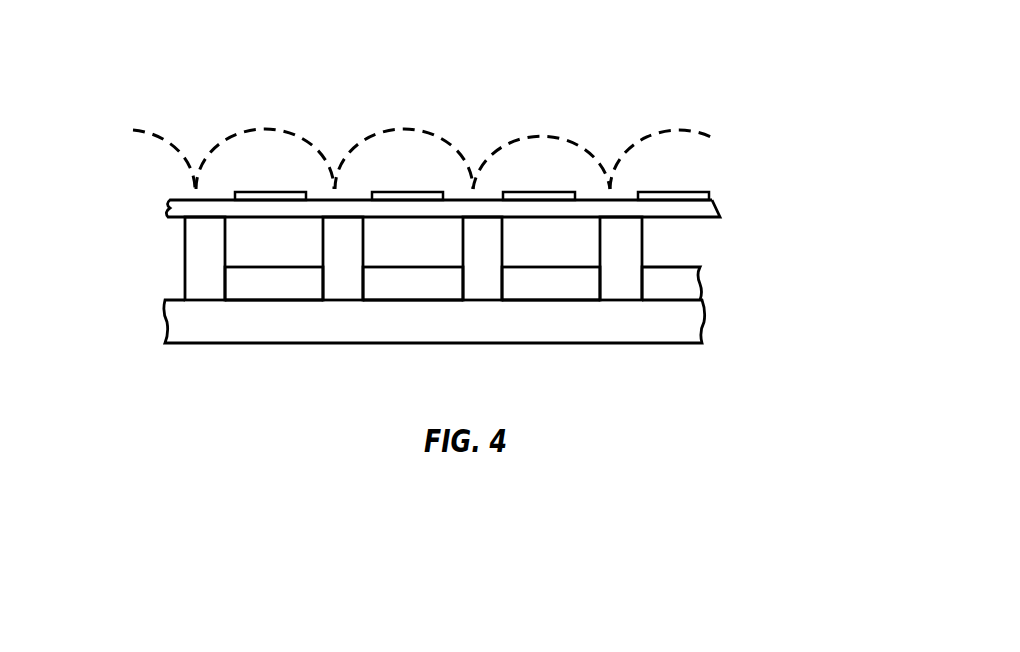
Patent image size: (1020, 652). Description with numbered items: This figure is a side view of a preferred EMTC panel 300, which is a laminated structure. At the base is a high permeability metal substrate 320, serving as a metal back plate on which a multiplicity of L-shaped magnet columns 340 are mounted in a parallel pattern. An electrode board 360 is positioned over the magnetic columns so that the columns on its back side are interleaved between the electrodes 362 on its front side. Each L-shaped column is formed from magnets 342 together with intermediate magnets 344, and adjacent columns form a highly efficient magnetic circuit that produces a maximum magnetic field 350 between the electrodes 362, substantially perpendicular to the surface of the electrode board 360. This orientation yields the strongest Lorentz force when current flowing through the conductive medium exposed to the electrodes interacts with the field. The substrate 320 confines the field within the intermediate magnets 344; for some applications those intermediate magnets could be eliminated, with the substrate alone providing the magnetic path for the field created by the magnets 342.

The EMTC panel 300 is at (803, 68).
The high μ metal substrate 320 is at (467, 316).
The L-shaped magnet columns 340 is at (147, 220).
The magnets 342 is at (482, 260).
The intermediate magnets 344 is at (448, 327).
The magnetic field (B field) 350 is at (425, 139).
The electrode board 360 is at (478, 195).
The electrodes 362 is at (471, 144).